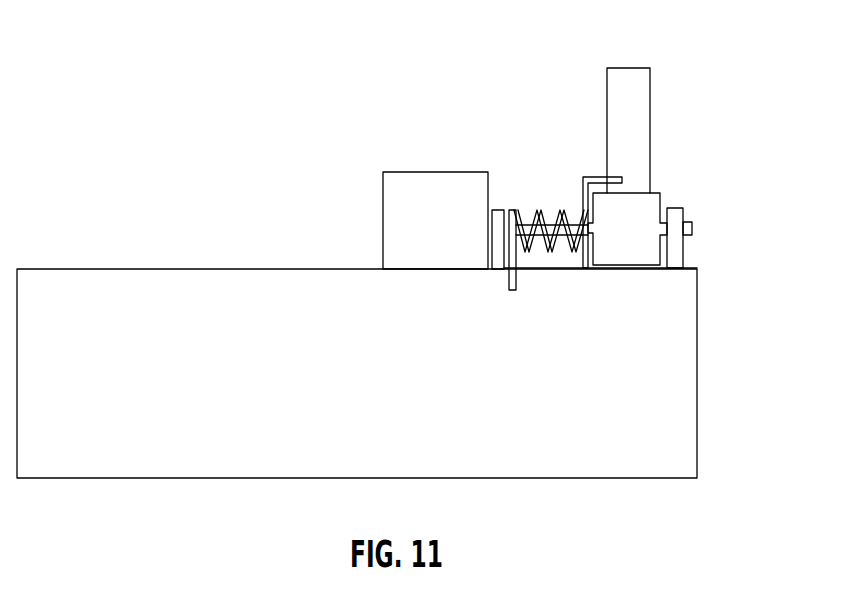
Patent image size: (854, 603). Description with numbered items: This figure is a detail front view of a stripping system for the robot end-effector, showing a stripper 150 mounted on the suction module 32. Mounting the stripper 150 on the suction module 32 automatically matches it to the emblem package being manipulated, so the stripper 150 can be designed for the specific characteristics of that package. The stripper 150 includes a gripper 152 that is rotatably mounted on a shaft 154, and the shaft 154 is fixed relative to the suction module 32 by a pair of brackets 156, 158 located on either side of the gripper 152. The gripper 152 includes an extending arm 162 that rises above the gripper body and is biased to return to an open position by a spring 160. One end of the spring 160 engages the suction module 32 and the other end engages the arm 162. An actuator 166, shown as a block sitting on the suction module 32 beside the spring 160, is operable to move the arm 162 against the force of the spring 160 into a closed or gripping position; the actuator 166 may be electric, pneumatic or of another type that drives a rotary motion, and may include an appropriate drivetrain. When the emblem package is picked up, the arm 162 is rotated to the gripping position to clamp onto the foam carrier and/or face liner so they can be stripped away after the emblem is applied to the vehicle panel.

The suction module 32 is at (197, 269).
The stripper 150 is at (538, 66).
The gripper 152 is at (660, 134).
The shaft 154 is at (692, 230).
The bracket 156 is at (500, 210).
The bracket 158 is at (673, 208).
The spring 160 is at (538, 210).
The arm 162 is at (627, 68).
The actuator 166 is at (420, 172).